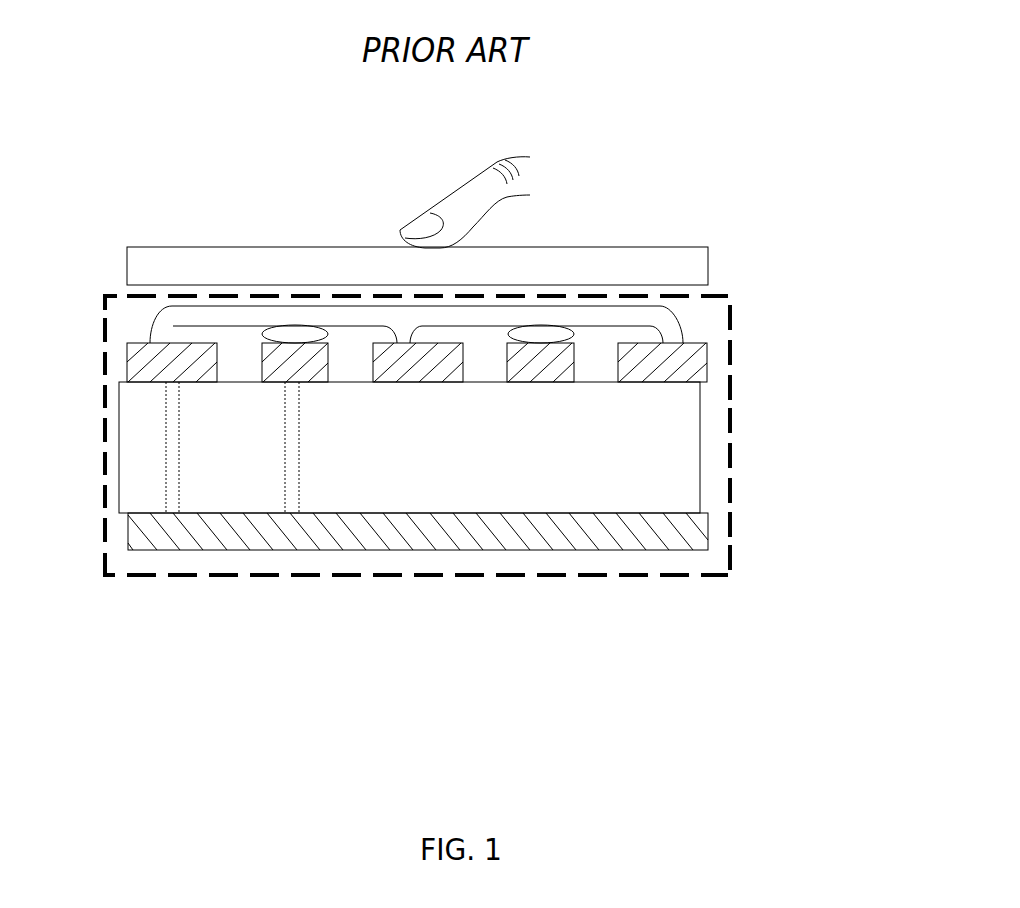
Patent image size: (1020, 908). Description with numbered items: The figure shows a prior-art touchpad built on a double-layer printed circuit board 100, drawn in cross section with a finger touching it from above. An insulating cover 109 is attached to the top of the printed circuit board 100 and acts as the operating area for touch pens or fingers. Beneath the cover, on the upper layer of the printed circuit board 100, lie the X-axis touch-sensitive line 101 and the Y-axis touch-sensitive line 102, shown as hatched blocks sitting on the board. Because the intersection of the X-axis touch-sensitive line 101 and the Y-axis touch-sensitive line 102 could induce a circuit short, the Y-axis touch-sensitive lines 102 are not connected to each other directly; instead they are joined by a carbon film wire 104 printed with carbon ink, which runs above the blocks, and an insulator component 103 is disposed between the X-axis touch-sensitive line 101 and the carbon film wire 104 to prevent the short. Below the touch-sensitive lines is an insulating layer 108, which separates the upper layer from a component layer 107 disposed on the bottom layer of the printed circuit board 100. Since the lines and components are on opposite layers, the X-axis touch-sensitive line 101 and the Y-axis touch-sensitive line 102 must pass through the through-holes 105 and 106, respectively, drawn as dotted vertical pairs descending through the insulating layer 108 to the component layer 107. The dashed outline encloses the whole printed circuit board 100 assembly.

The printed circuit board 100 is at (505, 580).
The X-axis touch-sensitive line 101 is at (523, 382).
The Y-axis touch-sensitive line 102 is at (642, 382).
The insulator component 103 is at (328, 334).
The carbon film wire 104 is at (683, 343).
The through-hole 105 is at (303, 495).
The through-hole 106 is at (187, 490).
The component layer 107 is at (693, 532).
The insulating layer 108 is at (685, 447).
The insulating cover 109 is at (690, 242).